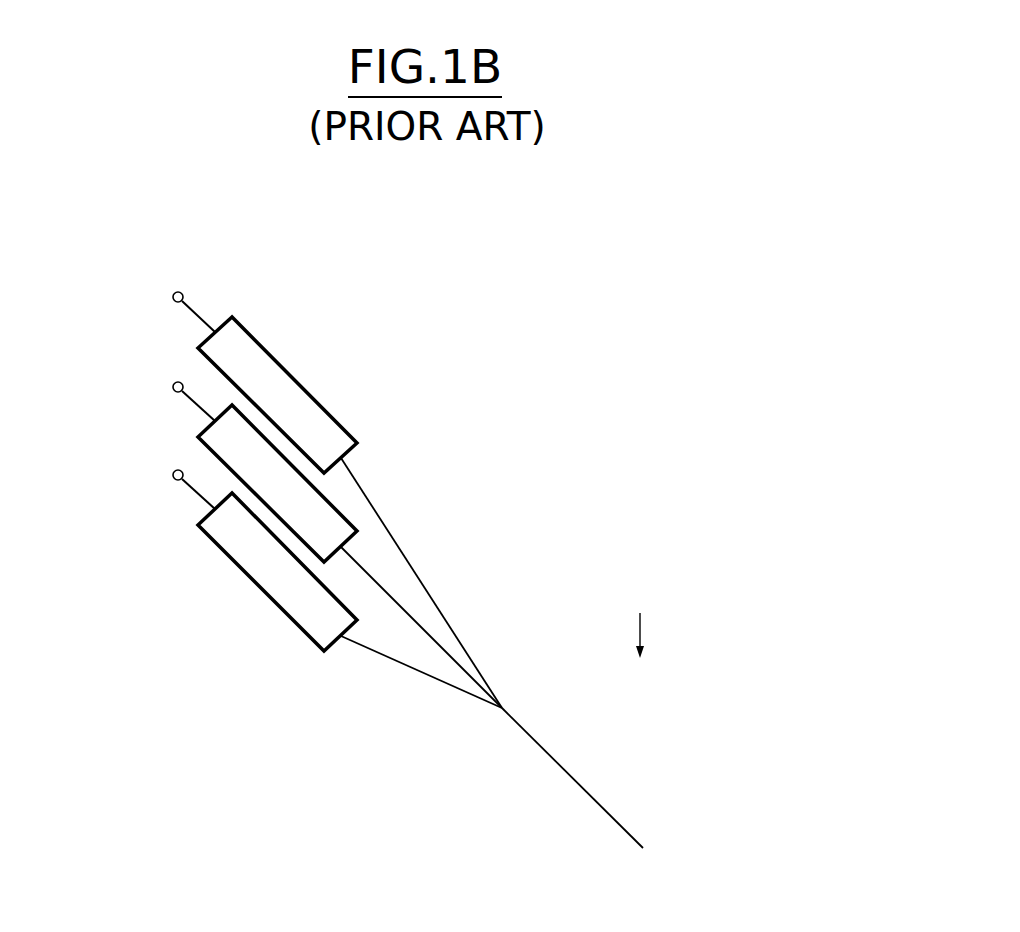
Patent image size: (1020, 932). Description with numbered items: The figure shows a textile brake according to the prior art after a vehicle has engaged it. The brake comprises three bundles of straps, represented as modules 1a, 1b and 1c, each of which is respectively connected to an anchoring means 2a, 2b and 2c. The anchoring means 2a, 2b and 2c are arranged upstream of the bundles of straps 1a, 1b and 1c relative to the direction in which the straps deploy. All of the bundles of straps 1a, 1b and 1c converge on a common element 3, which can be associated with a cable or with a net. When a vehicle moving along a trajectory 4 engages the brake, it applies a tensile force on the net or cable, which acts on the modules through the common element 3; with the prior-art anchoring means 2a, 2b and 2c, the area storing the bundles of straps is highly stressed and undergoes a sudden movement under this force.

The bundle of straps 1a is at (295, 374).
The bundle of straps 1b is at (212, 462).
The bundle of straps 1c is at (261, 594).
The anchoring means 2a is at (173, 297).
The anchoring means 2b is at (163, 387).
The anchoring means 2c is at (163, 475).
The common element 3 is at (592, 795).
The trajectory 4 is at (640, 627).